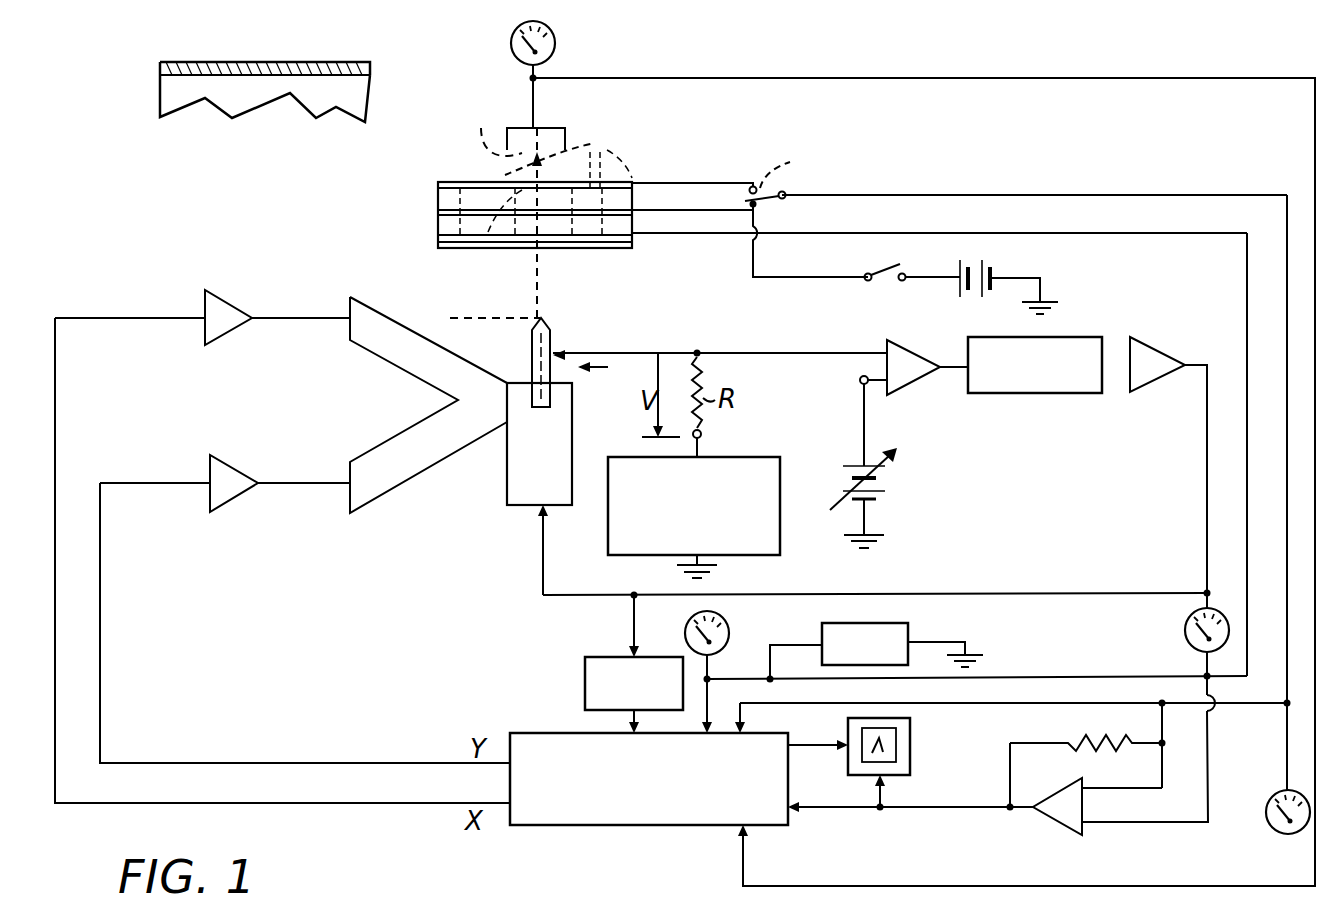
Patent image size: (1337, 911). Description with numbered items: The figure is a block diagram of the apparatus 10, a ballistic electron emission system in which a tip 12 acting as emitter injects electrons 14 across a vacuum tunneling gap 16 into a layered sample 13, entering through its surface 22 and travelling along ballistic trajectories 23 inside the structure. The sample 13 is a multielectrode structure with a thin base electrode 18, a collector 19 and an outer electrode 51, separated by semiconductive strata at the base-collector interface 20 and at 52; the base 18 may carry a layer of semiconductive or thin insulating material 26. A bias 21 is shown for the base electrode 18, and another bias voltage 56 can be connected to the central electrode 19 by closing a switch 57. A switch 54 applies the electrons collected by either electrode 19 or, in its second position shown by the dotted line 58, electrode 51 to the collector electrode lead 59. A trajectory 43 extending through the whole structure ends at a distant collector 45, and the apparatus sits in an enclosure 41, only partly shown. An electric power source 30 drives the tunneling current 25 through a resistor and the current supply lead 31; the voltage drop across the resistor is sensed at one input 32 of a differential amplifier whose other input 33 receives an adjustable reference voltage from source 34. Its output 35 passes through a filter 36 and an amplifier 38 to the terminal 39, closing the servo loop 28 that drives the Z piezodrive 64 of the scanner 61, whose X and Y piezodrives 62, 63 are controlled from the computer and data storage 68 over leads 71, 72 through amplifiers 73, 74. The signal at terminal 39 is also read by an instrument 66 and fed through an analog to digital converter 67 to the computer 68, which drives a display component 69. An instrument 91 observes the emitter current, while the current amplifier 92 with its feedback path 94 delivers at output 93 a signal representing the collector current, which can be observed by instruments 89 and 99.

The apparatus 10 is at (420, 565).
The tip 12 is at (532, 352).
The sample 13 is at (444, 178).
The electrons 14 is at (538, 305).
The vacuum tunneling gap 16 is at (514, 273).
The base electrode 18 is at (632, 222).
The collector 19 is at (637, 195).
The base-collector interface 20 is at (445, 222).
The bias 21 is at (910, 632).
The surface 22 is at (572, 248).
The ballistic trajectories 23 is at (557, 184).
The electric tunneling current 25 is at (548, 286).
The layer of semiconductive or thin insulating material 26 is at (638, 248).
The servo loop 28 is at (1040, 528).
The source 30 is at (781, 530).
The current supply lead 31 is at (640, 353).
The input of the differential amplifier 32 is at (872, 352).
The other input of the differential amplifier 33 is at (873, 384).
The source of reference voltage 34 is at (885, 488).
The output 35 is at (952, 338).
The filter 36 is at (1069, 393).
The amplifier 38 is at (1140, 340).
The terminal 39 is at (1205, 591).
The enclosure 41 is at (258, 62).
The trajectory 43 is at (488, 123).
The collector 45 is at (548, 128).
The electrode 51 is at (600, 182).
The stratum of semiconductive material 52 is at (445, 205).
The switch 54 is at (768, 200).
The bias voltage 56 is at (985, 262).
The switch 57 is at (883, 268).
The dotted line 58 is at (796, 165).
The collector electrode lead 59 is at (1026, 194).
The ballistic carrier injection scanner 61 is at (480, 500).
The X piezodrive 62 is at (395, 352).
The Y piezodrive 63 is at (393, 445).
The Z piezodrive 64 is at (528, 506).
The instrument 66 is at (1185, 630).
The analog to digital converter 67 is at (584, 690).
The computer and data storage 68 is at (643, 826).
The component 69 is at (910, 745).
The lead 71 is at (406, 804).
The lead 72 is at (406, 762).
The amplifier 73 is at (237, 499).
The amplifier 74 is at (218, 300).
The instrument 89 is at (1284, 836).
The instrument 91 is at (730, 625).
The current amplifier 92 is at (1065, 830).
The output 93 is at (1009, 812).
The feedback path 94 is at (1095, 751).
The instrument 99 is at (555, 38).